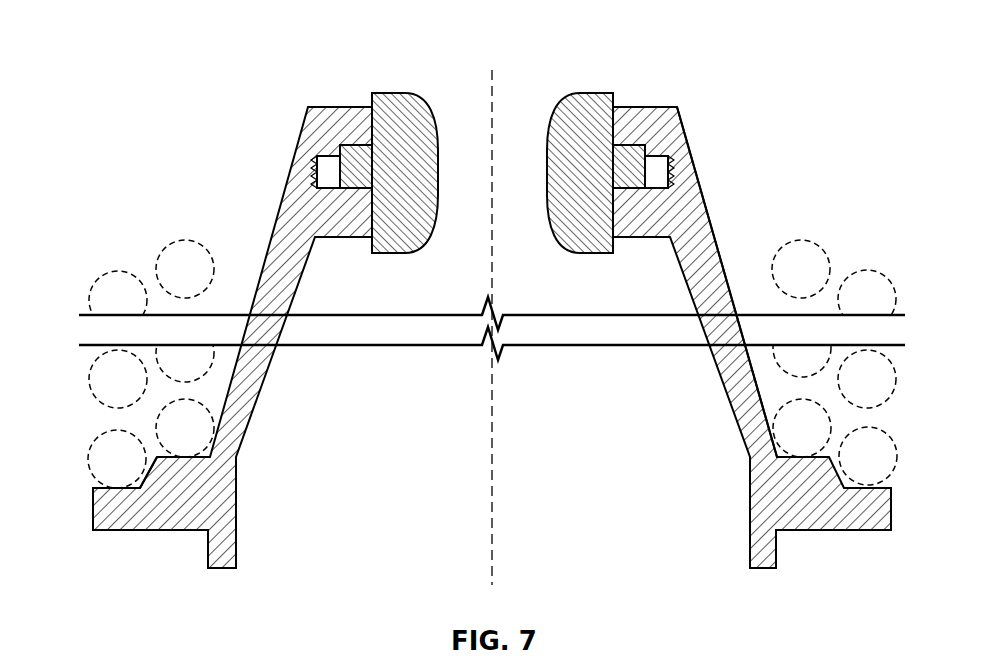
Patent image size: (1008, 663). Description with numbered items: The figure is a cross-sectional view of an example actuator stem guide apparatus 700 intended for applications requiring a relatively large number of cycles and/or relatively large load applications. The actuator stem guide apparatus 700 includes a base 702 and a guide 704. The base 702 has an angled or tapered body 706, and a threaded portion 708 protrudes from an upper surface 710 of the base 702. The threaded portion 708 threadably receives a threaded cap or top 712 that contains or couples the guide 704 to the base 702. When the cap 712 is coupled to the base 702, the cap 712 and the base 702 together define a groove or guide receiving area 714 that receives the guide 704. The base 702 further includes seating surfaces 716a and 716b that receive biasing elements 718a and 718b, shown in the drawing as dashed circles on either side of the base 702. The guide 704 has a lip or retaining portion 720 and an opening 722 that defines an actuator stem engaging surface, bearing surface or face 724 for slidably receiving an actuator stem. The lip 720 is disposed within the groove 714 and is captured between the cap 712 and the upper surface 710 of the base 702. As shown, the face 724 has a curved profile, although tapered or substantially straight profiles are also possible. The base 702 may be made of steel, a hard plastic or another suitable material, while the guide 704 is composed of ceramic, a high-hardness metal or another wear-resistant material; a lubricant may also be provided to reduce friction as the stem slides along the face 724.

The actuator stem guide apparatus 700 is at (790, 48).
The base 702 is at (752, 309).
The guide 704 is at (609, 173).
The angled or tapered body 706 is at (716, 234).
The threaded portion 708 is at (664, 182).
The upper surface 710 is at (305, 187).
The threaded cap or top 712 is at (657, 110).
The groove or guide receiving area 714 is at (647, 148).
The seating surface 716a is at (160, 453).
The seating surface 716b is at (206, 352).
The biasing element 718a is at (185, 240).
The biasing element 718b is at (117, 270).
The lip or retaining portion 720 is at (627, 178).
The opening 722 is at (403, 175).
The actuator stem engaging surface, bearing surface or face 724 is at (430, 220).